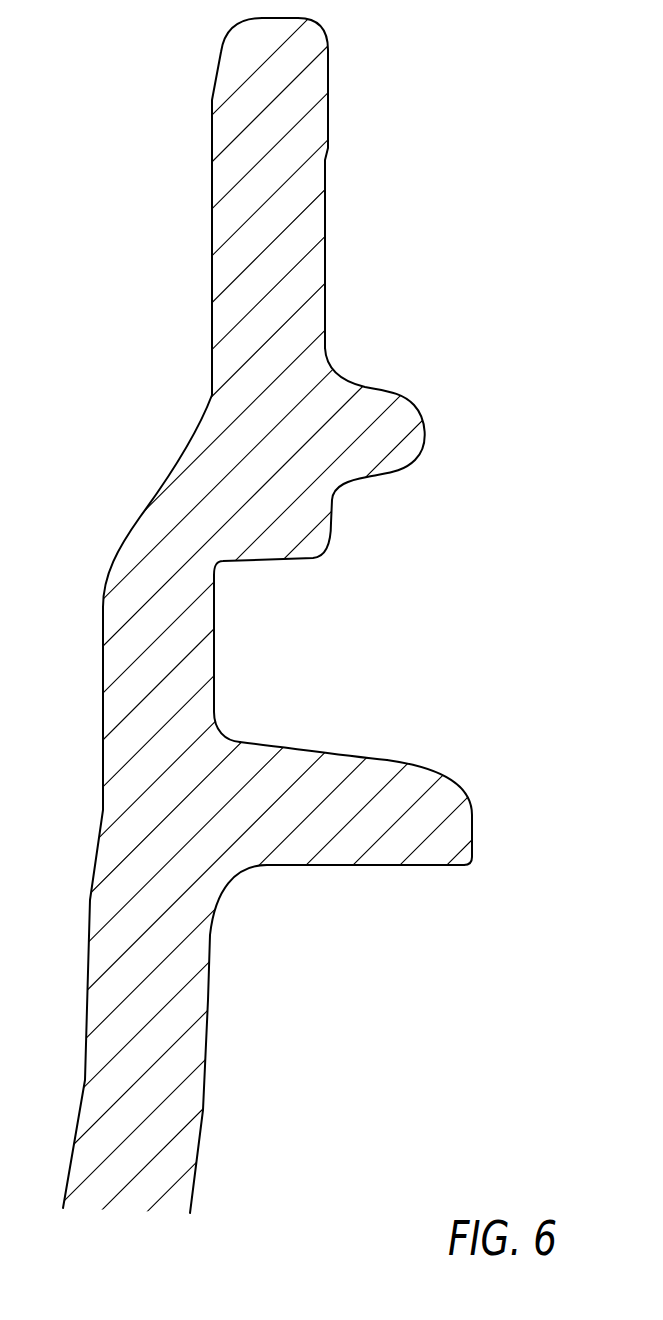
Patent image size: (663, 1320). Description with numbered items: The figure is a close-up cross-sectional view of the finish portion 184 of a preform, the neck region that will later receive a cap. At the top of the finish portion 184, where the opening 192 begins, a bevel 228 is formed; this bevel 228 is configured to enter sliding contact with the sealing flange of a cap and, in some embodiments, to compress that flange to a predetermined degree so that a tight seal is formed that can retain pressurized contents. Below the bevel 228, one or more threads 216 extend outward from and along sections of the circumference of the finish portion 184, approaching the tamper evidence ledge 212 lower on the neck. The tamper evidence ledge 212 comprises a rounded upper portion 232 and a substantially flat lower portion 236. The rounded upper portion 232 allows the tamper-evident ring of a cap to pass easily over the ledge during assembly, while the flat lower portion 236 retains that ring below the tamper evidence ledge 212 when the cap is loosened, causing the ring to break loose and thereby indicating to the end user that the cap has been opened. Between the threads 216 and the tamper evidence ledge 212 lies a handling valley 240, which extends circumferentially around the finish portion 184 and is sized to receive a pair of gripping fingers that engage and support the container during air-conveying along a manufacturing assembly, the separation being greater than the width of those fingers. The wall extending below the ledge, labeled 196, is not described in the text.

The finish portion 184 is at (441, 218).
The opening 192 is at (69, 216).
The stem 196 is at (208, 997).
The tamper evidence ledge 212 is at (472, 830).
The threads 216 is at (425, 430).
The bevel 228 is at (218, 72).
The rounded upper portion 232 is at (387, 760).
The flat lower portion 236 is at (347, 865).
The handling valley 240 is at (214, 653).